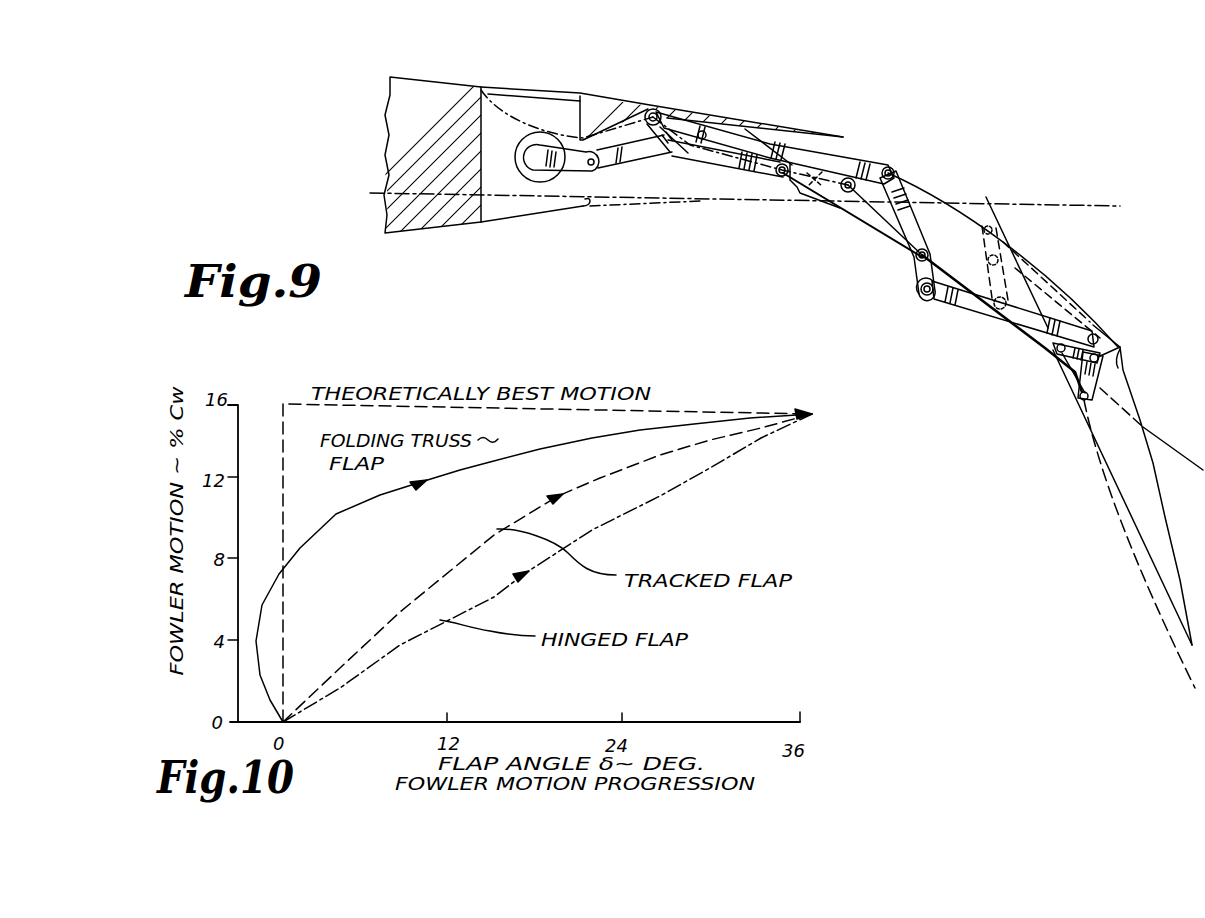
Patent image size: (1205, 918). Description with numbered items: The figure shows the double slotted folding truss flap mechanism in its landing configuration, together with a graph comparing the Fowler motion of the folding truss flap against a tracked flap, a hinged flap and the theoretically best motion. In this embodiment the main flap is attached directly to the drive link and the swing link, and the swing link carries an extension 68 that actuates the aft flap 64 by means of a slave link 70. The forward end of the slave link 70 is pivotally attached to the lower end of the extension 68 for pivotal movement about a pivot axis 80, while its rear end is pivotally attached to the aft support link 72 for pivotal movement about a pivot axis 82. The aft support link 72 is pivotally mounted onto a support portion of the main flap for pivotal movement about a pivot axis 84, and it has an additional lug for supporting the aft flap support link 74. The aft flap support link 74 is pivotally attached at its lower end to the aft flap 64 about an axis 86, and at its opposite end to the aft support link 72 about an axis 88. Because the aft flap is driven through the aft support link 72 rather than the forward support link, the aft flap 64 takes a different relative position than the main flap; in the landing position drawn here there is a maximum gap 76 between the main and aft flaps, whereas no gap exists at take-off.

The extension 68 is at (921, 291).
The pivot axis 80 is at (928, 300).
The slave link 70 is at (967, 310).
The aft flap 64 is at (1143, 472).
The pivot axis 86 is at (1078, 408).
The aft support link 72 is at (1065, 362).
The pivot axis 82 is at (1097, 334).
The pivot axis 84 is at (1055, 348).
The pivot axis 88 is at (1113, 353).
The gap 76 is at (1122, 364).
The aft flap support link 74 is at (1105, 382).